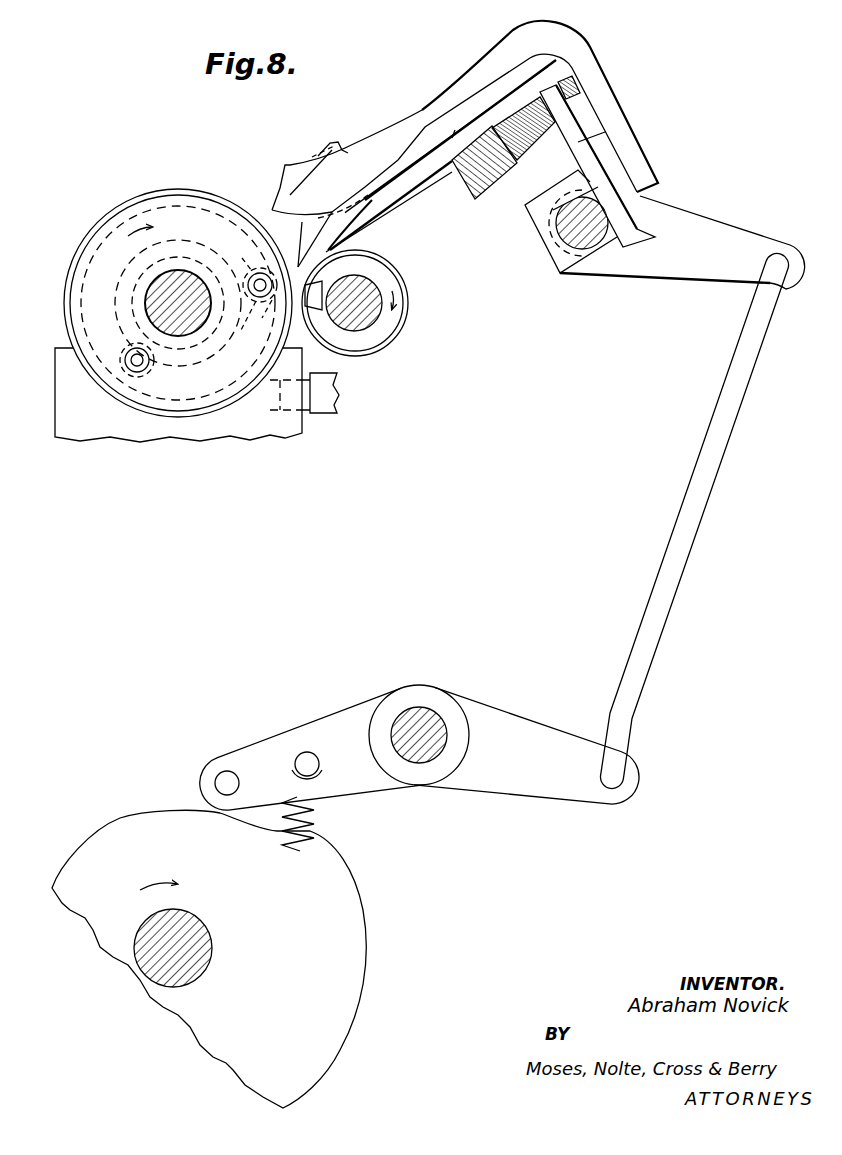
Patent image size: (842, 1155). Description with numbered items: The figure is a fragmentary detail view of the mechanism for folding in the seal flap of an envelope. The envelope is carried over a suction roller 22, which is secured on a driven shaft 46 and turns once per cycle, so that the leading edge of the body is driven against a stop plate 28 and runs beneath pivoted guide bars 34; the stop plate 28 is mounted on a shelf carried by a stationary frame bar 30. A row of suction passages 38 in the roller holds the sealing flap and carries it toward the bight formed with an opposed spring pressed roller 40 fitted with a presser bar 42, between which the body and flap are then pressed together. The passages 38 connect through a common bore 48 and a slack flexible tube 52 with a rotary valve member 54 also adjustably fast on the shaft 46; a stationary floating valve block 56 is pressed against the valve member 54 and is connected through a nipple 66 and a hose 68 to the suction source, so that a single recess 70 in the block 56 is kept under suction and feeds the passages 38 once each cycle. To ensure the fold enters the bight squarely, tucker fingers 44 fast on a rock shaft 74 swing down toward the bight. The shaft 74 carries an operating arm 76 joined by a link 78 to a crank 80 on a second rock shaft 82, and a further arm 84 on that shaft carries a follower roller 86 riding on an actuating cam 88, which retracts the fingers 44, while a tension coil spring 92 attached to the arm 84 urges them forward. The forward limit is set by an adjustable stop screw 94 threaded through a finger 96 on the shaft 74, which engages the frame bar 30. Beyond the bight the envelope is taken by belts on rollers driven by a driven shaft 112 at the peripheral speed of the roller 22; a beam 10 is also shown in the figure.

The beam 10 is at (389, 205).
The suction roller 22 is at (185, 189).
The stop plate 28 is at (433, 155).
The frame bar 30 is at (478, 199).
The guide bars 34 is at (280, 198).
The suction passages 38 is at (289, 256).
The spring pressed roller 40 is at (404, 309).
The presser bar 42 is at (306, 298).
The tucker fingers 44 is at (377, 170).
The driven shaft 46 is at (177, 330).
The common bore 48 is at (257, 270).
The flexible tube 52 is at (123, 288).
The rotary valve member 54 is at (102, 251).
The floating valve block 56 is at (62, 429).
The nipple 66 is at (292, 413).
The hose 68 is at (328, 399).
The recess 70 is at (126, 382).
The rock shaft 74 is at (610, 247).
The operating arm 76 is at (683, 272).
The link 78 is at (683, 489).
The crank 80 is at (517, 723).
The rock shaft 82 is at (417, 712).
The arm 84 is at (316, 730).
The follower roller 86 is at (205, 766).
The actuating cam 88 is at (100, 840).
The tension coil spring 92 is at (320, 813).
The adjustable stop screw 94 is at (518, 148).
The finger 96 is at (570, 125).
The driven shaft 112 is at (201, 943).